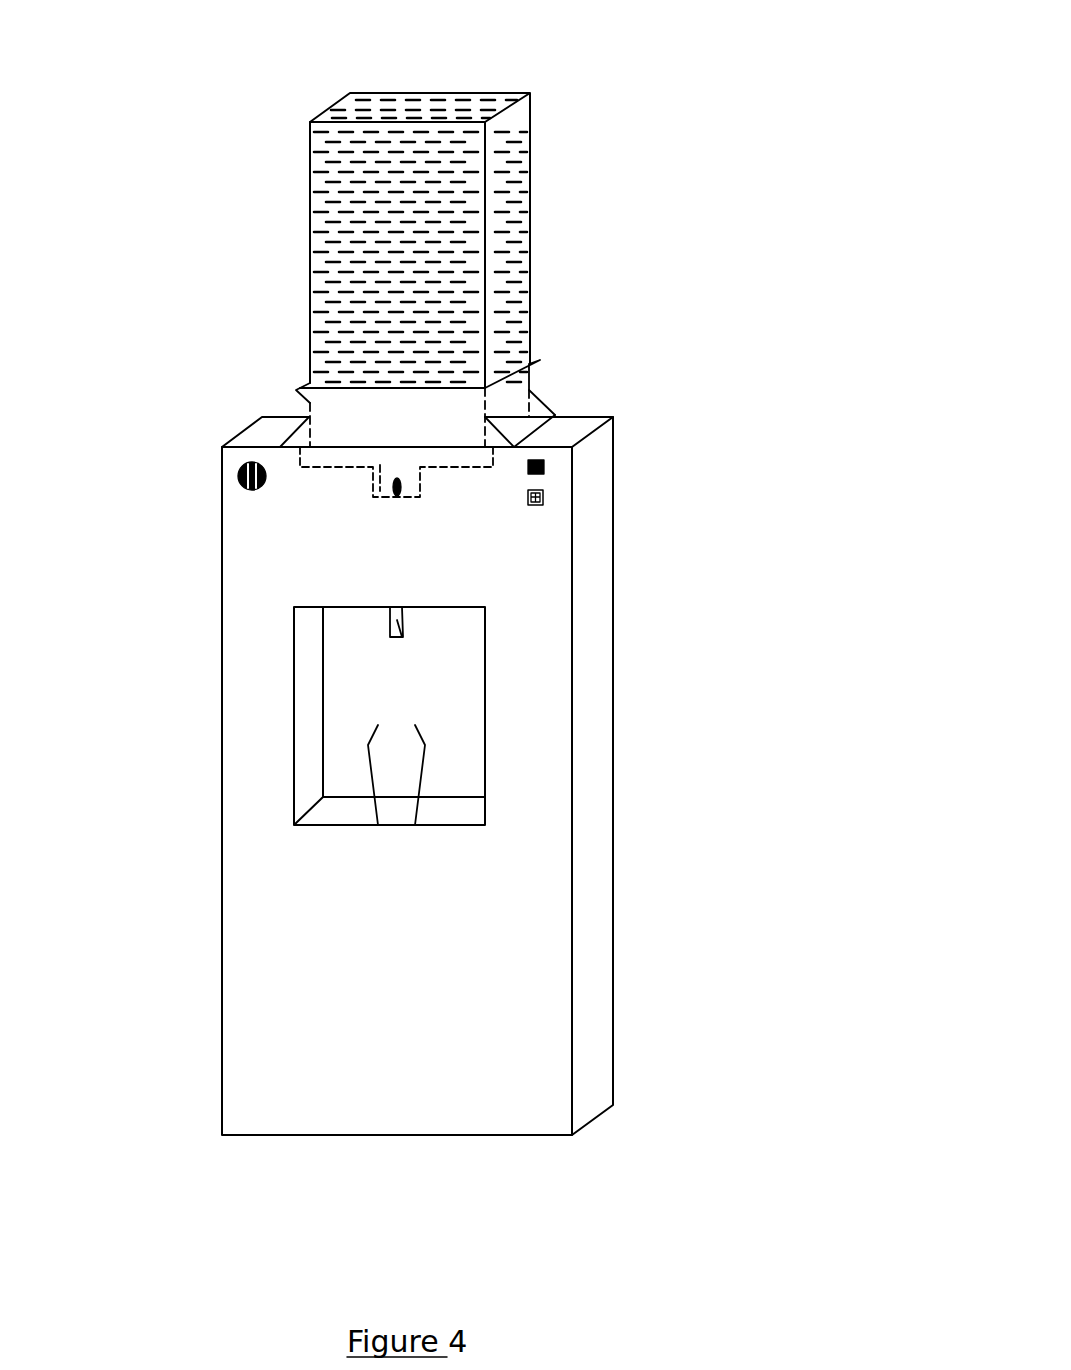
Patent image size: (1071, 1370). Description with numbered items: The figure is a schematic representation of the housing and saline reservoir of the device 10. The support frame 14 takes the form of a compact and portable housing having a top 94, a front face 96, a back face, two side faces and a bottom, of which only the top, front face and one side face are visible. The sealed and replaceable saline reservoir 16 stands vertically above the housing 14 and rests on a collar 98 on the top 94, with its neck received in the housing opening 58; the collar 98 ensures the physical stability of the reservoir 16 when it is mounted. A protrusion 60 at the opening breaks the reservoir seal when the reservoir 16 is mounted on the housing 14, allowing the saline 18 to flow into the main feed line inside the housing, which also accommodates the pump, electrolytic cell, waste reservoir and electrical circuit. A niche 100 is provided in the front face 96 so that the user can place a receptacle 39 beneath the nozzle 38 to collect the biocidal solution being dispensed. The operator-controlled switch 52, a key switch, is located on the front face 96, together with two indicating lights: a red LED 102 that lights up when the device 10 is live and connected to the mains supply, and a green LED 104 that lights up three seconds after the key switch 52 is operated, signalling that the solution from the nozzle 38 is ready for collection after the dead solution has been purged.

The device 10 is at (650, 56).
The support frame 14 is at (221, 987).
The saline reservoir 16 is at (545, 128).
The saline 18 is at (531, 249).
The nozzle 38 is at (401, 637).
The receptacle 39 is at (397, 767).
The operator-controlled switch 52 is at (238, 482).
The housing opening 58 is at (340, 462).
The protrusion 60 is at (398, 498).
The top 94 is at (573, 432).
The front face 96 is at (412, 920).
The collar 98 is at (298, 386).
The niche 100 is at (353, 680).
The red LED 102 is at (545, 470).
The green LED 104 is at (545, 503).